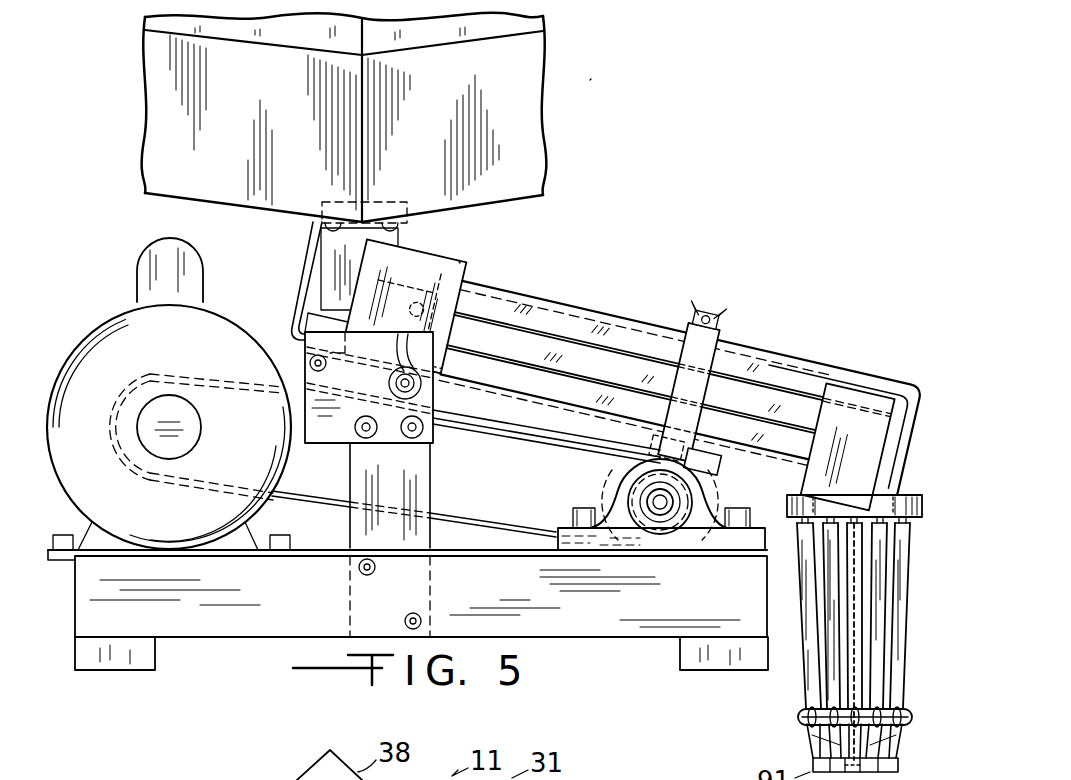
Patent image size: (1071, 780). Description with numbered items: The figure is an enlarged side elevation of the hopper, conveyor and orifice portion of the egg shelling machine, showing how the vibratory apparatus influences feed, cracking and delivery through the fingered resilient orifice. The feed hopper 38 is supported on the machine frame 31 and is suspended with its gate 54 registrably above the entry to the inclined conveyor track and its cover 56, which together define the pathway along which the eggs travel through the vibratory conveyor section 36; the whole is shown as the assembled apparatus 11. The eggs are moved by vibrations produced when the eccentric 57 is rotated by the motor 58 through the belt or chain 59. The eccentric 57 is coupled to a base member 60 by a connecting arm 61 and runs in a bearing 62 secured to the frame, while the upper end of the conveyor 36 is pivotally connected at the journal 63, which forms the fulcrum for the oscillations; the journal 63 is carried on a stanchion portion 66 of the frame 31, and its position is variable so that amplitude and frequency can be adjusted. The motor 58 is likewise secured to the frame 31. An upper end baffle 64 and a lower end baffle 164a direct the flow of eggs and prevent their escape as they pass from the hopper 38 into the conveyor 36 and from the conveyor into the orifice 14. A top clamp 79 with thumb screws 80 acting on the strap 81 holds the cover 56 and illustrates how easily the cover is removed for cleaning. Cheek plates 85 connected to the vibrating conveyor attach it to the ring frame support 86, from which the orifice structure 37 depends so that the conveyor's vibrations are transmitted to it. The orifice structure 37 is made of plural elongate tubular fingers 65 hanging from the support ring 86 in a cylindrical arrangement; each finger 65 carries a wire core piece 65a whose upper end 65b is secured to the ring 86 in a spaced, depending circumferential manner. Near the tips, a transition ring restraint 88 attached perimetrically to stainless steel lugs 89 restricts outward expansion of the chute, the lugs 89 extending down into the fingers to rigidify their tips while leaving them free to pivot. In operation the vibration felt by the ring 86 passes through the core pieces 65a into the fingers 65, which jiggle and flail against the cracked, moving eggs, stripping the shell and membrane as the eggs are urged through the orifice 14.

The cutting apparatus 11 is at (601, 80).
The orifice 14 is at (722, 728).
The machine frame 31 is at (268, 642).
The vibratory conveyor section 36 is at (656, 279).
The orifice structure 37 is at (931, 732).
The feed hopper 38 is at (535, 115).
The gate 54 is at (405, 221).
The cover 56 is at (543, 300).
The eccentric 57 is at (628, 523).
The motor 58 is at (125, 326).
The belt or chain 59 is at (462, 515).
The base member 60 is at (718, 457).
The connecting arm 61 is at (655, 447).
The bearing 62 is at (702, 545).
The journal 63 is at (422, 388).
The upper end baffle 64 is at (305, 282).
The fingers 65 is at (806, 678).
The wire core piece 65a is at (858, 592).
The upper end of the wire core pieces 65b is at (828, 518).
The stanchion portion 66 is at (356, 482).
The top clamp 79 is at (750, 319).
The thumb screws 80 is at (683, 306).
The strap 81 is at (708, 355).
The cheek plates 85 is at (858, 395).
The ring frame support 86 is at (906, 505).
The transition ring restraint 88 is at (808, 733).
The lugs 89 is at (896, 712).
The bracket frame 164a is at (911, 452).